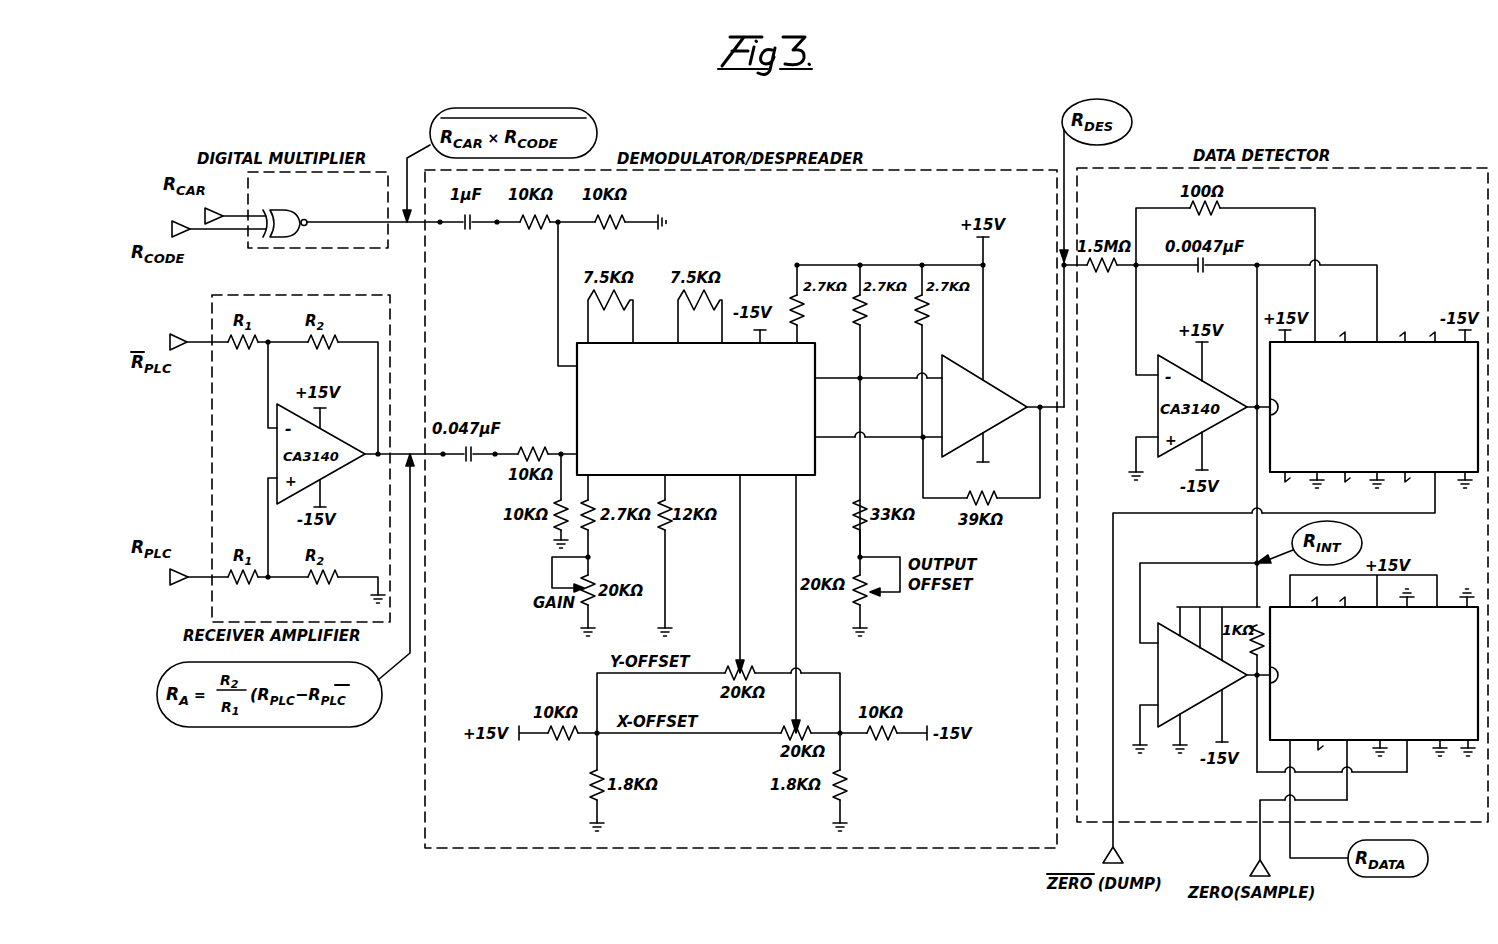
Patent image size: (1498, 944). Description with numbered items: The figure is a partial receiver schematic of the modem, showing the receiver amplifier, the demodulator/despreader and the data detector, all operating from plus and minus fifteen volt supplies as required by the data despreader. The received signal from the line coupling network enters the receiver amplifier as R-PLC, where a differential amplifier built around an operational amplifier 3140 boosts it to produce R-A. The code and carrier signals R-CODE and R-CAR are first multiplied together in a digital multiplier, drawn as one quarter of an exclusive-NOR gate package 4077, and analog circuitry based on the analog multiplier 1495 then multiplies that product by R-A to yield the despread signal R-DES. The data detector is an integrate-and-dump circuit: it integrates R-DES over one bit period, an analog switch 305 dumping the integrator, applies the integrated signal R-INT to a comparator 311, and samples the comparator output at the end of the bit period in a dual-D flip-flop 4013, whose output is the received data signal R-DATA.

The 1/4 CD4077 exclusive-NOR gate (digital multiplier) 4077 is at (261, 211).
The MC1495 analog multiplier 1495 is at (696, 409).
The CA3140 operational amplifier 3140 is at (984, 418).
The DG305Y analog switch 305 is at (1374, 407).
The LM311 comparator 311 is at (1209, 657).
The CD4013 dual-D flip-flop 4013 is at (1374, 673).